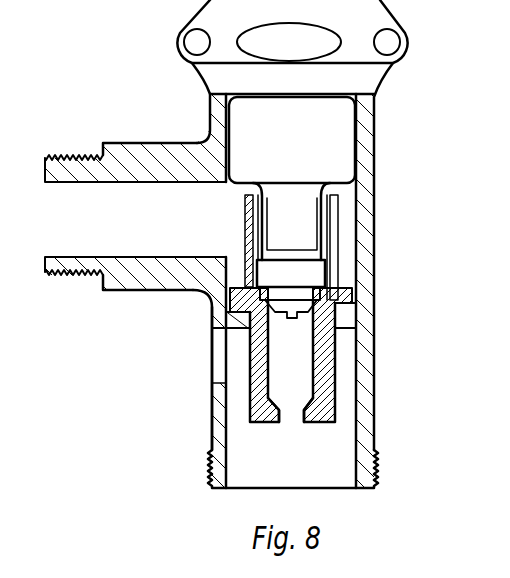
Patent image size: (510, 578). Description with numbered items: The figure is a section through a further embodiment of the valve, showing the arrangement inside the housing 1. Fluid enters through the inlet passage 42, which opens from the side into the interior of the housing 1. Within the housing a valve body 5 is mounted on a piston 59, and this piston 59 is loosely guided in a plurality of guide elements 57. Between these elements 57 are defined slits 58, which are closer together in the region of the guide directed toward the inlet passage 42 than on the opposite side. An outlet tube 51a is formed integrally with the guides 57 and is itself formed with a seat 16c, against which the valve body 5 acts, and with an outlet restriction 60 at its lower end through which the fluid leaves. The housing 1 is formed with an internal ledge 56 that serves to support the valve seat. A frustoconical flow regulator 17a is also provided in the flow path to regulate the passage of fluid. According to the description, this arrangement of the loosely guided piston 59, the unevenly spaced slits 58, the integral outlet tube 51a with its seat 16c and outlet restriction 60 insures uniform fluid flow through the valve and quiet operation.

The housing 1 is at (367, 147).
The inlet passage 42 is at (110, 243).
The seat 16c is at (228, 304).
The internal ledge 56 is at (223, 320).
The slits 58 is at (330, 205).
The guide elements 57 is at (334, 235).
The piston 59 is at (293, 252).
The valve body 5 is at (307, 291).
The frustoconical flow regulator 17a is at (393, 333).
The outlet tube 51a is at (395, 378).
The outlet restriction 60 is at (286, 413).